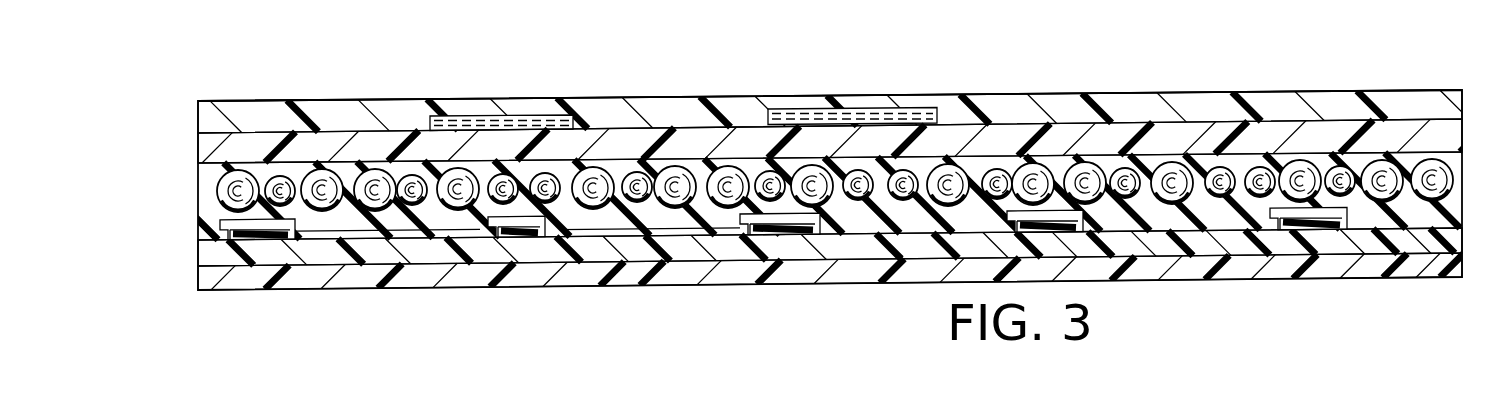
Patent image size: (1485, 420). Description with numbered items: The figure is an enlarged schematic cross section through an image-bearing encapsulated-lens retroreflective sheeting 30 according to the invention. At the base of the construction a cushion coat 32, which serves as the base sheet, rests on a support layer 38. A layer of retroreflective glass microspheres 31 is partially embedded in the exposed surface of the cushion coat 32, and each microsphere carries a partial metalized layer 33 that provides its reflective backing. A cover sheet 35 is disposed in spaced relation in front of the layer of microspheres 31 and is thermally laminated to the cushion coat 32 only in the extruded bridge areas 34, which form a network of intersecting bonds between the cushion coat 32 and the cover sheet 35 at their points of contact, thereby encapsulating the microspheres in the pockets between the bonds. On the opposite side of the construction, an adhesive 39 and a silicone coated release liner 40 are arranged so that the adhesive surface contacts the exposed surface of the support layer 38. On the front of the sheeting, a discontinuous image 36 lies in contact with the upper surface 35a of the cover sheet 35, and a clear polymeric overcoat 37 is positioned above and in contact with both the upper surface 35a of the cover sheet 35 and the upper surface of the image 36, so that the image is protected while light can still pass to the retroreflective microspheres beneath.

The chip assembly 30 is at (205, 93).
The retroreflective glass microspheres 31 is at (1253, 143).
The cushion coat 32 is at (1218, 213).
The partial metalized layer 33 is at (863, 222).
The extruded bridge areas 34 is at (257, 155).
The cover sheet 35 is at (638, 138).
The upper surface of the cover sheet 35a is at (221, 116).
The discontinuous image 36 is at (513, 103).
The clear polymeric overcoat 37 is at (1419, 99).
The support layer 38 is at (338, 250).
The adhesive 39 is at (529, 248).
The silicone coated release liner 40 is at (234, 299).